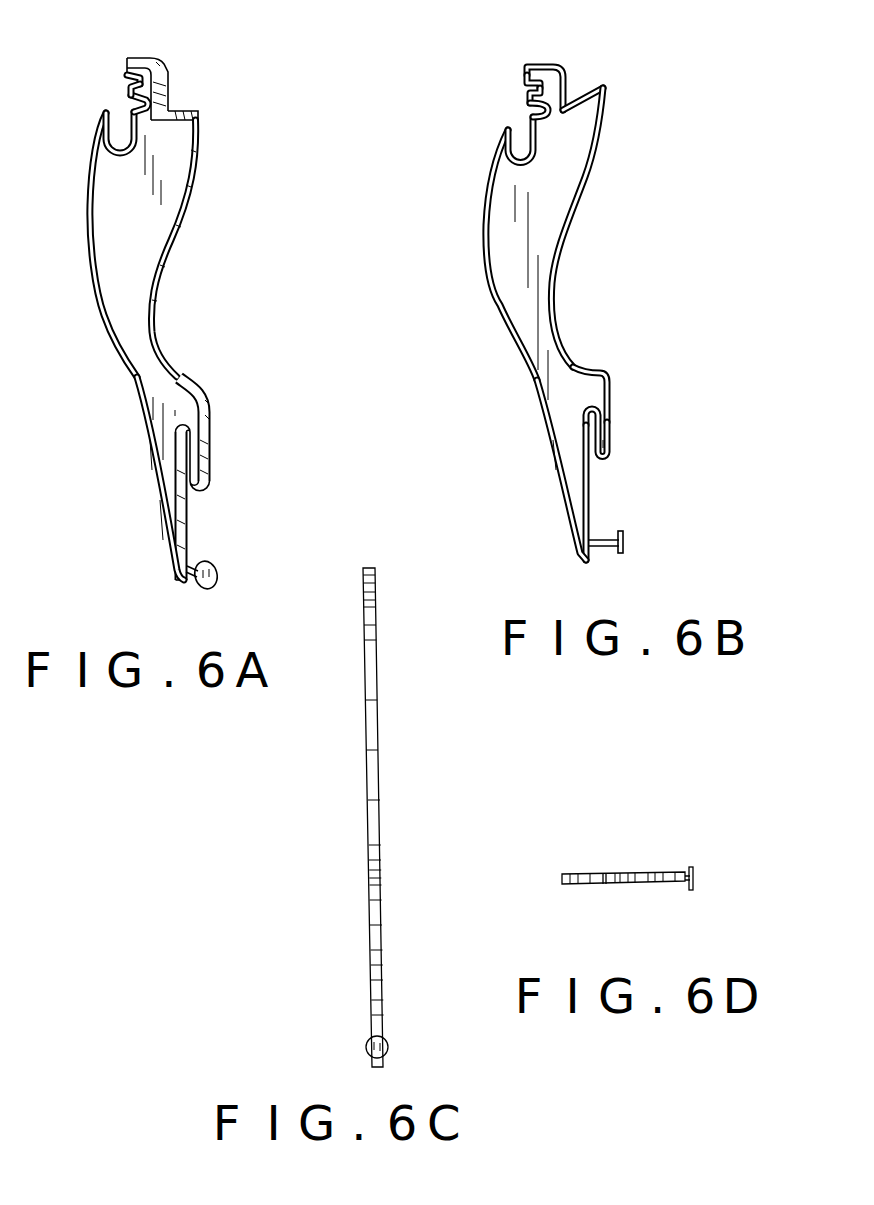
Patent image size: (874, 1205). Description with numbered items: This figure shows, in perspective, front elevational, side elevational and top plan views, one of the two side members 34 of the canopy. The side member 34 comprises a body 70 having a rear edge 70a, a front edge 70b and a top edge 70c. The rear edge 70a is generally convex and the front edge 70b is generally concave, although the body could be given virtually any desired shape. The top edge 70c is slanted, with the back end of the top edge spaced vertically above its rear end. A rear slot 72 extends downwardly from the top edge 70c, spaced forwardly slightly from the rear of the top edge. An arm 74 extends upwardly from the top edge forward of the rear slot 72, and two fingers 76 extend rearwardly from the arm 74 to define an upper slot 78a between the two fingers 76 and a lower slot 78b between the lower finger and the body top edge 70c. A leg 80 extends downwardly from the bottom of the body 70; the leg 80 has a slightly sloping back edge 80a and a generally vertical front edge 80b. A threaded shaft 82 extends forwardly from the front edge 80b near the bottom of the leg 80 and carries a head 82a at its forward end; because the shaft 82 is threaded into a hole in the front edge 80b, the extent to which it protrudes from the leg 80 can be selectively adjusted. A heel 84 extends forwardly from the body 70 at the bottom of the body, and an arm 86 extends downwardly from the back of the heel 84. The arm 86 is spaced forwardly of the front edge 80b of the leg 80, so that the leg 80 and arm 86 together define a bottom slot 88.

In FIG. 6A, the side member 34 is at (209, 64).
In FIG. 6B, the side member 34 is at (614, 175).
In FIG. 6A, the body 70 is at (187, 215).
In FIG. 6B, the body 70 is at (563, 203).
In FIG. 6C, the body 70 is at (368, 855).
In FIG. 6A, the rear edge 70a is at (88, 247).
In FIG. 6B, the rear edge 70a is at (487, 232).
In FIG. 6D, the rear edge 70a is at (580, 885).
In FIG. 6A, the front edge 70b is at (170, 237).
In FIG. 6B, the front edge 70b is at (562, 245).
In FIG. 6A, the top edge 70c is at (188, 108).
In FIG. 6B, the top edge 70c is at (597, 93).
In FIG. 6D, the top edge 70c is at (660, 873).
In FIG. 6A, the rear slot 72 is at (118, 134).
In FIG. 6B, the rear slot 72 is at (525, 140).
In FIG. 6D, the rear slot 72 is at (603, 873).
In FIG. 6A, the arm 74 is at (149, 57).
In FIG. 6B, the arm 74 is at (568, 66).
In FIG. 6C, the arm 74 is at (374, 580).
In FIG. 6D, the arm 74 is at (628, 873).
In FIG. 6A, the fingers 76 is at (127, 62).
In FIG. 6B, the fingers 76 is at (528, 68).
In FIG. 6A, the upper slot 78a is at (128, 78).
In FIG. 6B, the upper slot 78a is at (532, 84).
In FIG. 6B, the lower slot 78b is at (535, 108).
In FIG. 6A, the leg 80 is at (129, 398).
In FIG. 6B, the leg 80 is at (560, 505).
In FIG. 6C, the leg 80 is at (372, 1003).
In FIG. 6A, the back edge 80a is at (158, 503).
In FIG. 6B, the back edge 80a is at (568, 532).
In FIG. 6A, the front edge 80b is at (186, 505).
In FIG. 6B, the front edge 80b is at (590, 506).
In FIG. 6A, the threaded shaft 82 is at (183, 583).
In FIG. 6B, the threaded shaft 82 is at (603, 552).
In FIG. 6D, the threaded shaft 82 is at (695, 878).
In FIG. 6A, the head 82a is at (218, 578).
In FIG. 6B, the head 82a is at (626, 540).
In FIG. 6C, the head 82a is at (366, 1045).
In FIG. 6A, the heel 84 is at (203, 392).
In FIG. 6B, the heel 84 is at (607, 375).
In FIG. 6A, the arm 86 is at (207, 432).
In FIG. 6B, the arm 86 is at (613, 430).
In FIG. 6C, the arm 86 is at (372, 935).
In FIG. 6A, the bottom slot 88 is at (185, 462).
In FIG. 6B, the bottom slot 88 is at (598, 463).